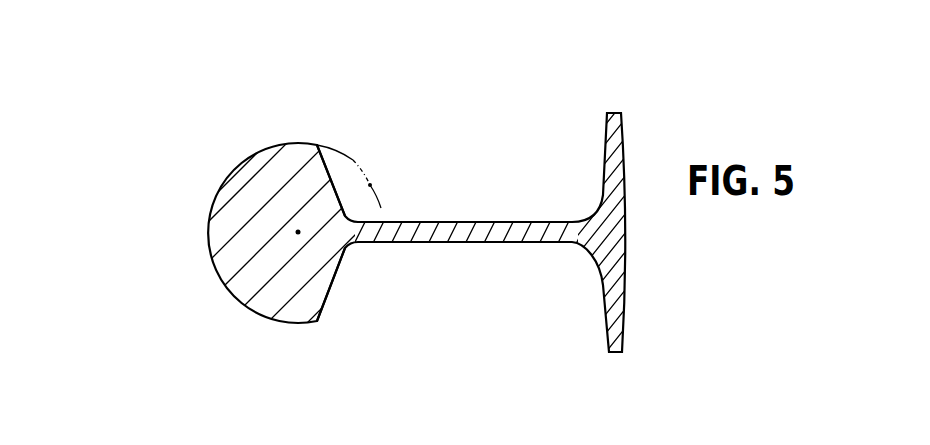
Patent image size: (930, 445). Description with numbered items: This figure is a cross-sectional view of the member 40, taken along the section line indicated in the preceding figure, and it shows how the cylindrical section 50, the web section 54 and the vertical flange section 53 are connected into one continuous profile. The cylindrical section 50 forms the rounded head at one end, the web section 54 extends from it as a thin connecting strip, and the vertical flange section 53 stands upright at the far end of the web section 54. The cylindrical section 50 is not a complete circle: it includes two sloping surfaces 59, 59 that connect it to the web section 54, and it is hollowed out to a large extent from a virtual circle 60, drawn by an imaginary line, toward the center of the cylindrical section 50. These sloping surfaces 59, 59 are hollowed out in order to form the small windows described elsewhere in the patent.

The rail member 40 is at (186, 133).
The cylindrical section 50 is at (212, 262).
The sloping surfaces 59 is at (353, 170).
The virtual circle 60 is at (370, 185).
The web section 54 is at (524, 243).
The vertical flange section 53 is at (612, 355).